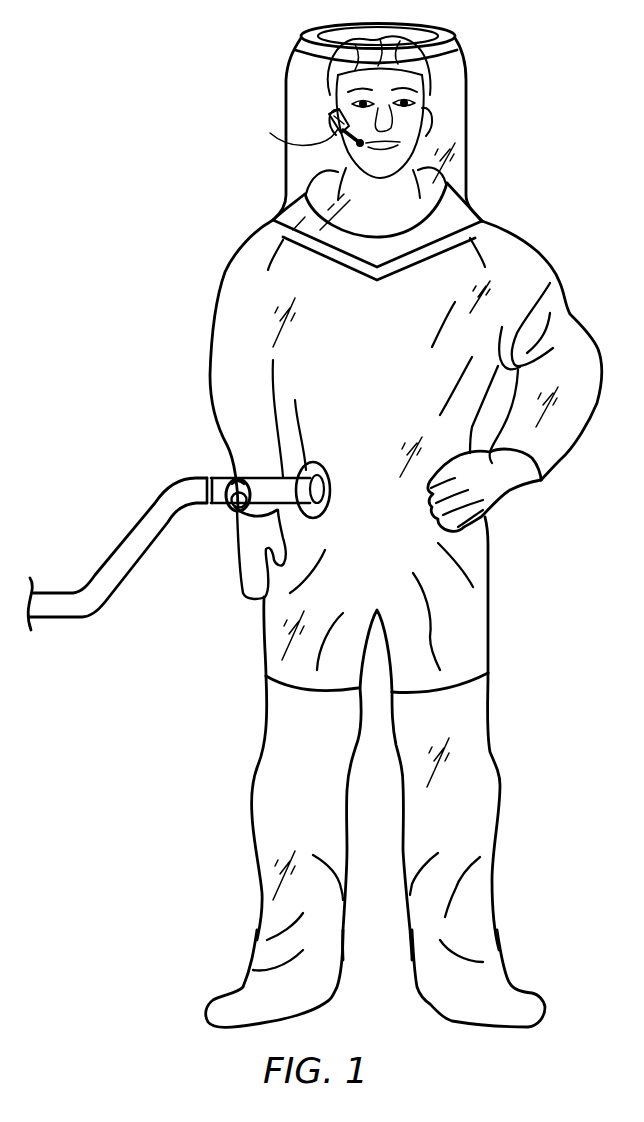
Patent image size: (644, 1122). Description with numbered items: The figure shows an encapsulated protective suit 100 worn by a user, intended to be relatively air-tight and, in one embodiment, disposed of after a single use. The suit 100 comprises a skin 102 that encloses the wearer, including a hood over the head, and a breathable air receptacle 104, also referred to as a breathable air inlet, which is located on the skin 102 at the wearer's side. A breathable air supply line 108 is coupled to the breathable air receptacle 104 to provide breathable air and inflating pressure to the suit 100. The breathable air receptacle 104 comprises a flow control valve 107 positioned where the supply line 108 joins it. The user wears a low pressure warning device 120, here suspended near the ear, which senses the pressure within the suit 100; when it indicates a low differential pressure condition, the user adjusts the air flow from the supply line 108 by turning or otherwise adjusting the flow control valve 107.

The encapsulated protective suit 100 is at (234, 71).
The skin 102 is at (517, 250).
The breathable air receptacle 104 is at (193, 521).
The flow control valve 107 is at (230, 482).
The breathable air supply line 108 is at (131, 576).
The low pressure warning device 120 is at (270, 133).